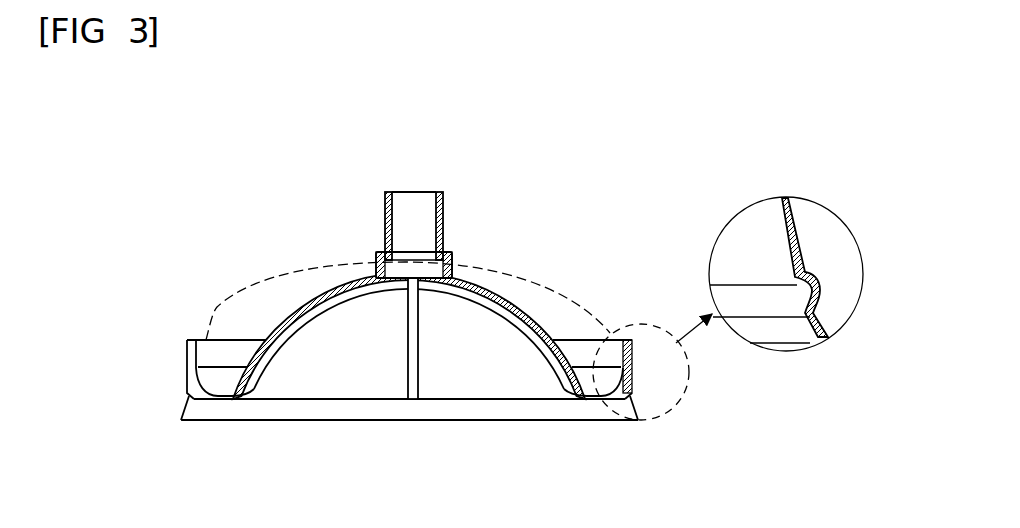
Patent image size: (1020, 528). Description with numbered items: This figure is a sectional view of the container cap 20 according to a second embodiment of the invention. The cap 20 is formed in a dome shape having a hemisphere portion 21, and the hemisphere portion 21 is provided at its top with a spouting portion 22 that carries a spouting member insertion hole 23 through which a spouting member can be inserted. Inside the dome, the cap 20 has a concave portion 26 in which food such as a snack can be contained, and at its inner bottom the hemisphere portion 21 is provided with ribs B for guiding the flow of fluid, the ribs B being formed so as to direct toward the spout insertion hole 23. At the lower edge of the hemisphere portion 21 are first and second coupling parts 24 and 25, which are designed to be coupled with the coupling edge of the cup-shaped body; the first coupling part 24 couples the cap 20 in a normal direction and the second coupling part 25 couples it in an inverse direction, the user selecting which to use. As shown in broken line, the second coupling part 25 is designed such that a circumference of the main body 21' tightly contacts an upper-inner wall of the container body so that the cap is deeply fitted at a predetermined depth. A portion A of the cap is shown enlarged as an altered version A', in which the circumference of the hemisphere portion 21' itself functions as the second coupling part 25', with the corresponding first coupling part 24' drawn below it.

The cap 20 is at (287, 352).
The hemisphere portion 21 is at (409, 311).
The main body 21' is at (444, 231).
The spouting portion 22 is at (446, 224).
The spouting member insertion hole 23 is at (410, 210).
The first coupling part 24 is at (463, 450).
The first coupling part 24' is at (773, 361).
The second coupling part 25 is at (605, 329).
The second coupling part 25' is at (803, 233).
The concave portion 26 is at (356, 332).
The portion A is at (652, 367).
The altered portion A' is at (797, 274).
The ribs B is at (400, 360).